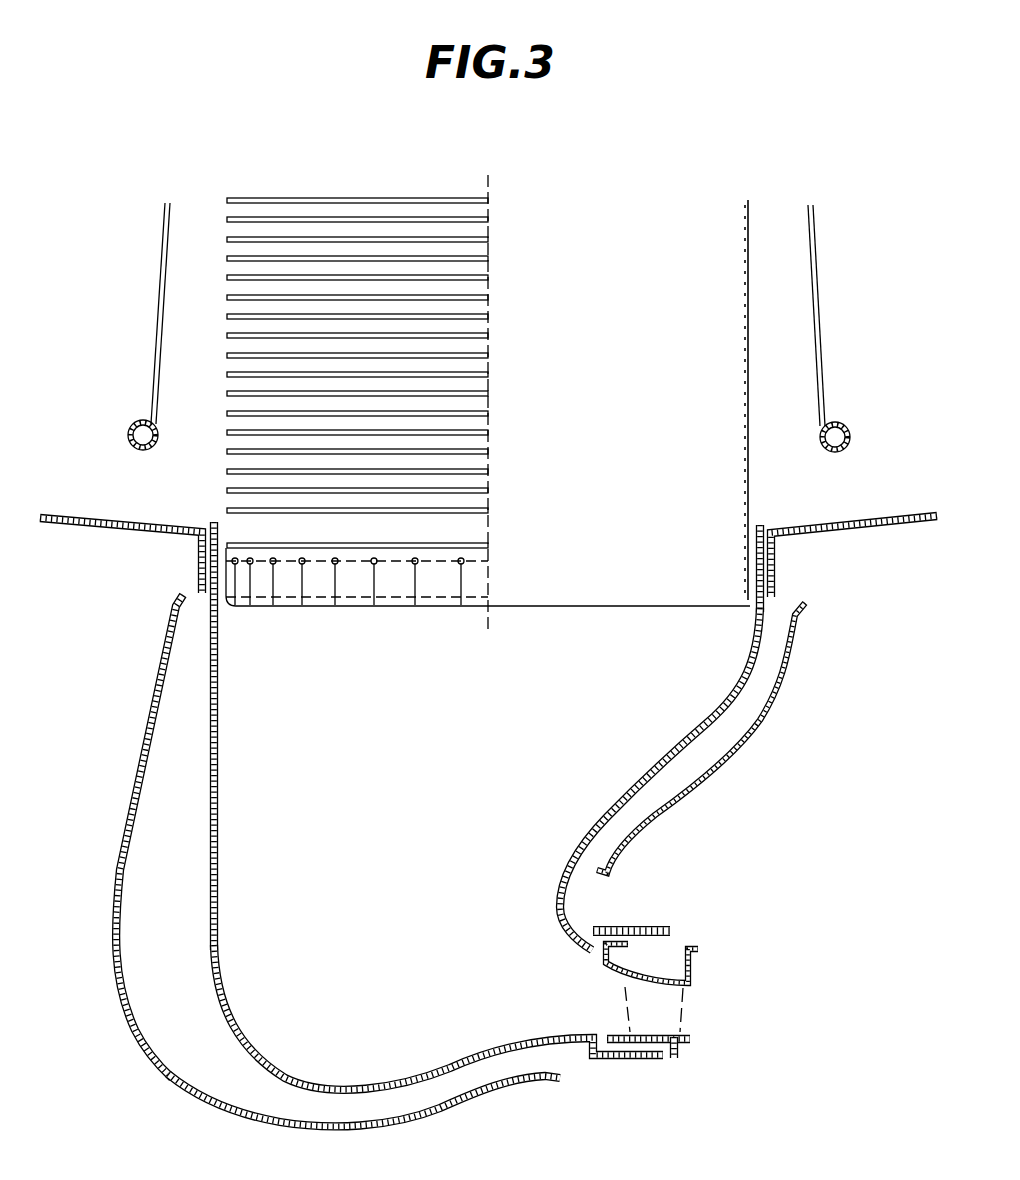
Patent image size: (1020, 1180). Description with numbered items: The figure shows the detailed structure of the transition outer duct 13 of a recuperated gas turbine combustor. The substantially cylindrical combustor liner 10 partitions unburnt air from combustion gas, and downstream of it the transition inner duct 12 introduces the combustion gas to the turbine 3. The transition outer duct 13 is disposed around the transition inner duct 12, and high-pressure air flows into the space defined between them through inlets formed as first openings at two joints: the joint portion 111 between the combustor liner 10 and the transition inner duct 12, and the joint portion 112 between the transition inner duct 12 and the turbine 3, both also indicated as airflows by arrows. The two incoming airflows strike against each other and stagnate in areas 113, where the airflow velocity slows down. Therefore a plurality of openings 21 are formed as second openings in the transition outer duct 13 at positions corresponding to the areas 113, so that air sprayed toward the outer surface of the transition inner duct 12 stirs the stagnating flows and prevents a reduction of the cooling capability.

The combustor liner 10 is at (556, 585).
The joint portion 111 is at (200, 622).
The joint portion 112 is at (592, 897).
The areas where the two airflows strike against each other 113 is at (265, 1060).
The transition inner duct 12 is at (216, 796).
The transition outer duct 13 is at (120, 878).
The openings 21 is at (240, 1107).
The turbine 3 is at (665, 1022).